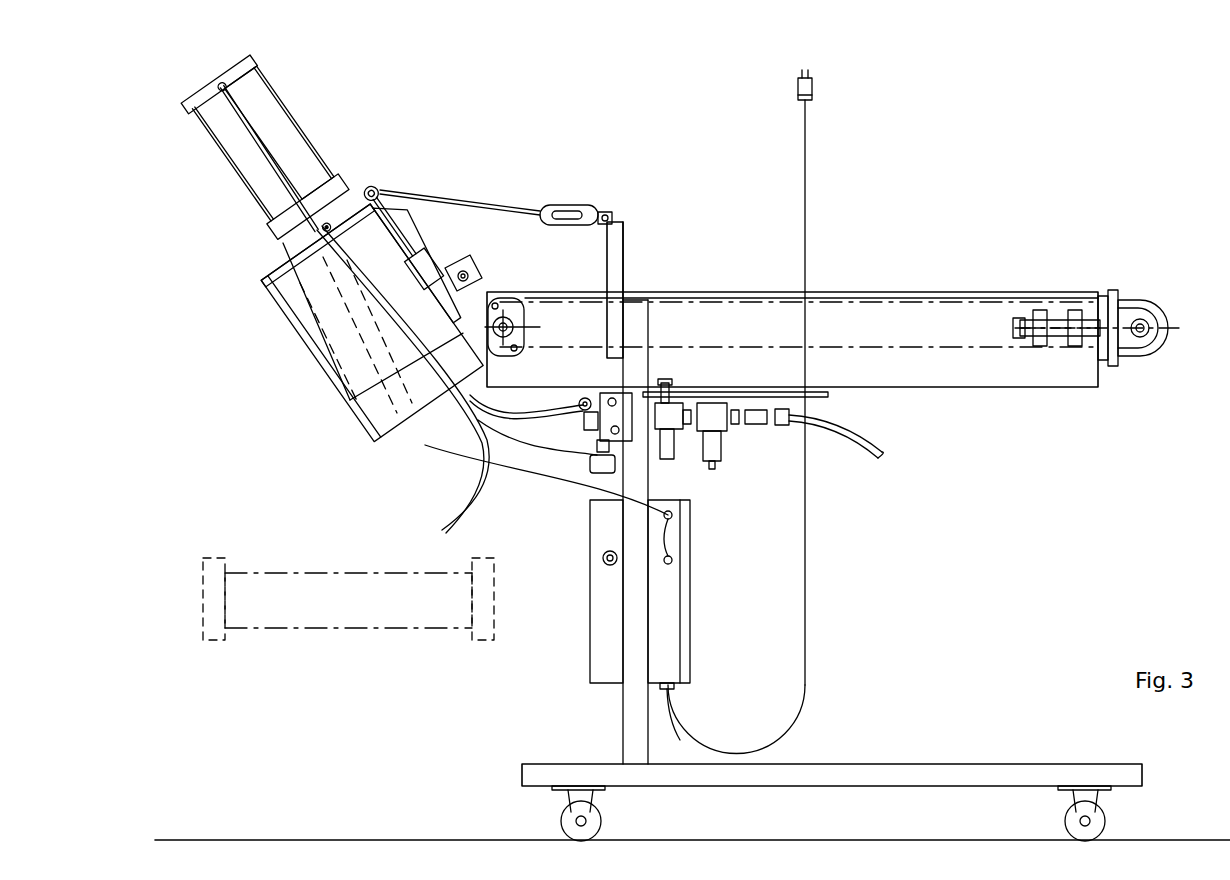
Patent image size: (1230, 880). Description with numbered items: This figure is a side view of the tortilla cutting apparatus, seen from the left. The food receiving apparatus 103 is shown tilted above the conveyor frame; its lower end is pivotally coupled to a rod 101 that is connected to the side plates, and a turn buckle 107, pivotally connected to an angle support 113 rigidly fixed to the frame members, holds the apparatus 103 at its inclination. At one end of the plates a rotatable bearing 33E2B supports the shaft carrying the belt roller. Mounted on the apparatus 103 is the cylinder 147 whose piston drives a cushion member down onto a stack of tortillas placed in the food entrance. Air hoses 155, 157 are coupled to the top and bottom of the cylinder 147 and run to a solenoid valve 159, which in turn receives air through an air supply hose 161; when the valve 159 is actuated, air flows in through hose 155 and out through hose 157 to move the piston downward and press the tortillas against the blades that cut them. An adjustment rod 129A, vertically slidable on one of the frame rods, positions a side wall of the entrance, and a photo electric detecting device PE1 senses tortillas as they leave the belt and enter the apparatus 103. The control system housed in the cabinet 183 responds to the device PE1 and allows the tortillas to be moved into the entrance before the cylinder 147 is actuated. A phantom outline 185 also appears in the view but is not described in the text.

The cylinder 147 is at (272, 140).
The air hose 155 is at (237, 133).
The air hose 157 is at (328, 222).
The adjustment rod 129A is at (426, 258).
The photo electric detecting device PE1 is at (476, 268).
The turn buckle 107 is at (543, 205).
The angle support 113 is at (625, 258).
The rotatable bearing 33E2B is at (505, 318).
The food receiving apparatus 103 is at (250, 267).
The rod 101 is at (480, 392).
The solenoid valve 159 is at (600, 462).
The air supply hose 161 is at (855, 445).
The tube (phantom) 185 is at (286, 572).
The cabinet 183 is at (692, 583).